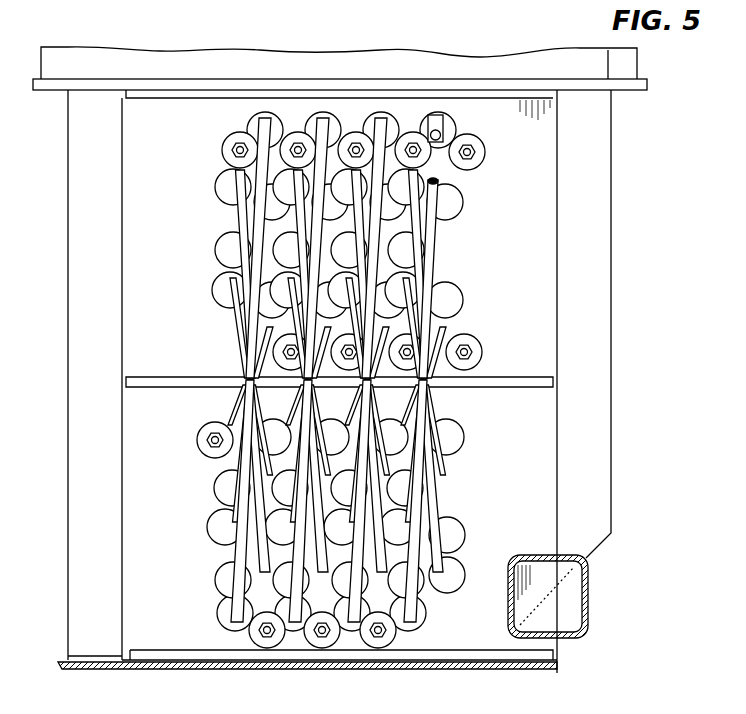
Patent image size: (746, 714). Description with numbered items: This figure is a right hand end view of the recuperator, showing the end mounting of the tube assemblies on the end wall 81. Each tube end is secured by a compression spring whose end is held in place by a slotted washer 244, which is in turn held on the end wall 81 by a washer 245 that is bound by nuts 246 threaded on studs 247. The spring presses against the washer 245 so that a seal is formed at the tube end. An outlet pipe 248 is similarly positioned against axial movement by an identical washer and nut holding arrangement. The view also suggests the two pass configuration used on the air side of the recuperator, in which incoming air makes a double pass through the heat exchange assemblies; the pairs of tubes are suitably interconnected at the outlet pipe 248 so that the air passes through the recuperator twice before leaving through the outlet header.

The end wall 81 is at (514, 244).
The slotted washer 244 is at (429, 114).
The washer 245 is at (478, 162).
The nuts 246 is at (483, 143).
The studs 247 is at (477, 152).
The outlet pipe 248 is at (425, 274).